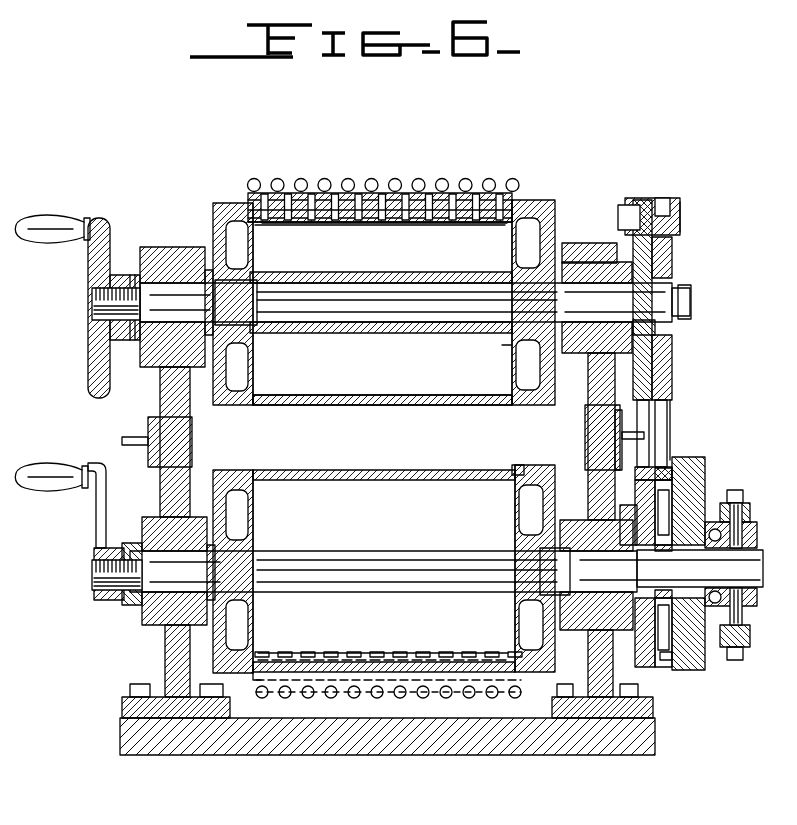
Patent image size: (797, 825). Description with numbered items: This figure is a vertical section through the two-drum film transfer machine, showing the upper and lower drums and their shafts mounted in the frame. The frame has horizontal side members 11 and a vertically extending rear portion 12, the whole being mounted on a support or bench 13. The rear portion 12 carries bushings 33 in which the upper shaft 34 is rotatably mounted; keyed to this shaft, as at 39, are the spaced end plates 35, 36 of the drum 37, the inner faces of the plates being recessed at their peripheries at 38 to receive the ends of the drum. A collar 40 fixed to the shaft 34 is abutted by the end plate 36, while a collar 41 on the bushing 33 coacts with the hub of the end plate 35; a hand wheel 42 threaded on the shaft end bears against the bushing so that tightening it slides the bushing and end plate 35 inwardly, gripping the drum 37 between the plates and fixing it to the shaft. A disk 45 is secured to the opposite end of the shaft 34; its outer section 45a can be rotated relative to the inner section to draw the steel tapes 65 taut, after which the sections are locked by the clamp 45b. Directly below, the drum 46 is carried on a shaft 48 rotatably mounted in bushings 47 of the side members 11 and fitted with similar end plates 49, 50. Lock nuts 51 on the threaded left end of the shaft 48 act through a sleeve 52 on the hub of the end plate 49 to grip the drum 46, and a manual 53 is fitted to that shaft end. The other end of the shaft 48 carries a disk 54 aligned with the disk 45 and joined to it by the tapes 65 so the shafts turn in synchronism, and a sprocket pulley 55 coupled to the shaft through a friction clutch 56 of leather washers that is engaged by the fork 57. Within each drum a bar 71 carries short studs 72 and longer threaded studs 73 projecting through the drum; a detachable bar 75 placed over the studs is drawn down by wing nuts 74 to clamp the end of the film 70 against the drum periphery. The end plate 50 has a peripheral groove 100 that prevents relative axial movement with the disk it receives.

The horizontal side members 11 is at (166, 660).
The vertically extending rear portion 12 is at (162, 390).
The support or bench 13 is at (418, 755).
The bushings 33 is at (168, 268).
The shaft 34 is at (362, 288).
The end plate 35 is at (214, 212).
The end plate 36 is at (552, 222).
The drum 37 is at (412, 405).
The recess 38 is at (258, 398).
The key 39 is at (255, 272).
The collar 40 is at (532, 343).
The collar 41 is at (208, 336).
The hand wheel 42 is at (106, 222).
The disk 45 is at (672, 252).
The outer section 45a is at (672, 356).
The clamp 45b is at (680, 214).
The drum 46 is at (428, 470).
The bushings 47 is at (150, 607).
The shaft 48 is at (416, 551).
The end plate 49 is at (222, 470).
The end plate 50 is at (516, 494).
The lock nuts 51 is at (128, 545).
The sleeve 52 is at (214, 560).
The manual 53 is at (98, 512).
The disk 54 is at (662, 468).
The sprocket pulley 55 is at (705, 470).
The friction clutch 56 is at (705, 656).
The fork 57 is at (750, 510).
The steel tapes 65 is at (646, 420).
The film 70 is at (380, 193).
The bar 71 is at (325, 222).
The studs 72 is at (292, 222).
The studs 73 is at (413, 222).
The wing nuts 74 is at (405, 193).
The detachable bar 75 is at (336, 191).
The peripheral groove 100 is at (516, 465).